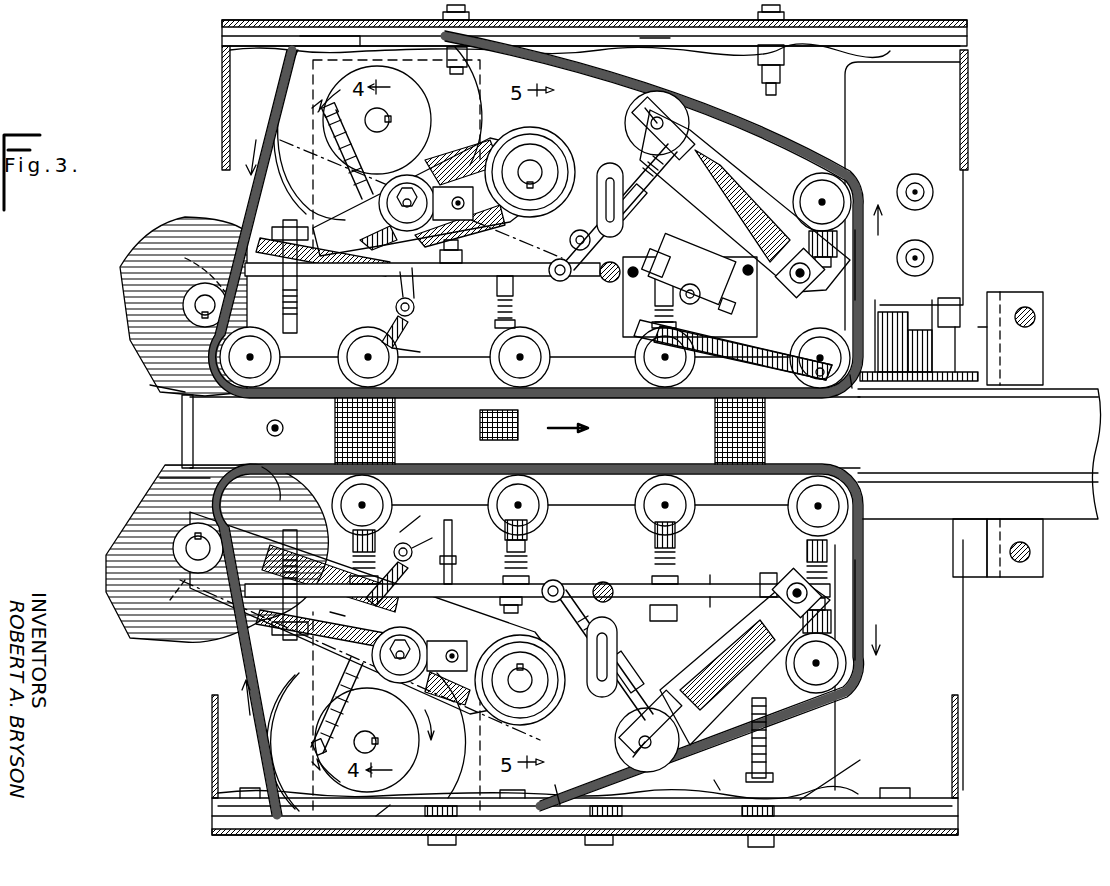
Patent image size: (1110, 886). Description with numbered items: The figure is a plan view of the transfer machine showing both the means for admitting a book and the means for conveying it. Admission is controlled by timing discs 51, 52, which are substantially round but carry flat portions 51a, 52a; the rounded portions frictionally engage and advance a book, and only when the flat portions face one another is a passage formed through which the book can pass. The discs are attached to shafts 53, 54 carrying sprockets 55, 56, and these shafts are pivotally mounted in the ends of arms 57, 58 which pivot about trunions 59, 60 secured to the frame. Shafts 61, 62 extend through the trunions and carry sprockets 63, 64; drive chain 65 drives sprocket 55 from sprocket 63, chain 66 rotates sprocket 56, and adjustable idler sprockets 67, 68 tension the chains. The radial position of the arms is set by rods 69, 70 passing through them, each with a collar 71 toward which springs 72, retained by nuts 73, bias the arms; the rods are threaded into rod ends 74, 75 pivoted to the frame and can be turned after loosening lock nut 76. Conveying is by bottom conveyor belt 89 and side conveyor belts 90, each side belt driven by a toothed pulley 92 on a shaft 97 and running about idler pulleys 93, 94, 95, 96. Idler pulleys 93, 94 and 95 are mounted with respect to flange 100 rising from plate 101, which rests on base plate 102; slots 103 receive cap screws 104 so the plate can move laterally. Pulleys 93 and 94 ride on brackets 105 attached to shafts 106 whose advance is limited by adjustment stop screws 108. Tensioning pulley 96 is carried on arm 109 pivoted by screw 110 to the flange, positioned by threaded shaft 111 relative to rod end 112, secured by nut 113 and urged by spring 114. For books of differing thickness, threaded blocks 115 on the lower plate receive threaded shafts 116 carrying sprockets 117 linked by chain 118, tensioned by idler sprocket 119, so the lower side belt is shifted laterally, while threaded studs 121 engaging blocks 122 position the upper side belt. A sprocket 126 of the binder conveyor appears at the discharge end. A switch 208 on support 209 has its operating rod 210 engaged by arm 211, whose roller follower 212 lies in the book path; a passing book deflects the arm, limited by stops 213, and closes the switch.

The timing disc 51 is at (165, 306).
The flat portion 51a is at (148, 352).
The timing disc 52 is at (202, 546).
The flat portion 52a is at (145, 490).
The shaft 53 is at (182, 290).
The shaft 54 is at (182, 538).
The sprocket 55 is at (198, 261).
The sprocket 56 is at (164, 594).
The arm 57 is at (343, 222).
The arm 58 is at (262, 585).
The trunion 59 is at (546, 158).
The trunion 60 is at (540, 705).
The shaft 61 is at (534, 165).
The shaft 62 is at (515, 690).
The sprocket 63 is at (565, 155).
The sprocket 64 is at (523, 682).
The drive chain 65 is at (478, 162).
The chain 66 is at (462, 630).
The adjustable idler sprocket 67 is at (447, 184).
The adjustable idler sprocket 68 is at (390, 628).
The rod 69 is at (413, 314).
The rod 70 is at (410, 576).
The collar 71 is at (370, 231).
The spring 72 is at (340, 161).
The nut 73 is at (352, 150).
The rod end 74 is at (406, 304).
The rod end 75 is at (426, 533).
The lock nut 76 is at (404, 518).
The bottom conveyor belt 89 is at (640, 443).
The side conveyor belt 90 is at (245, 195).
The pulley 92 is at (297, 98).
The idler pulley 93 is at (282, 352).
The idler pulley 94 is at (325, 357).
The idler pulley 95 is at (795, 180).
The idler pulley 96 is at (668, 105).
The shaft 97 is at (379, 108).
The flange 100 is at (480, 280).
The plate 101 is at (654, 430).
The base plate 102 is at (950, 138).
The slot 103 is at (624, 433).
The cap screw 104 is at (588, 230).
The bracket 105 is at (512, 318).
The shaft 106 is at (540, 280).
The adjustment stop screw 108 is at (536, 544).
The arm 109 is at (745, 427).
The screw 110 is at (848, 278).
The threaded shaft 111 is at (650, 210).
The rod end 112 is at (560, 258).
The nut 113 is at (603, 580).
The spring 114 is at (765, 374).
The threaded block 115 is at (773, 773).
The threaded shaft 116 is at (766, 737).
The sprocket 117 is at (623, 783).
The chain 118 is at (724, 772).
The idler sprocket 119 is at (559, 788).
The threaded stud 121 is at (452, 70).
The block 122 is at (463, 70).
The sprocket 126 is at (918, 382).
The switch 208 is at (668, 290).
The support 209 is at (640, 262).
The operating rod 210 is at (689, 268).
The arm 211 is at (736, 360).
The roller follower 212 is at (830, 385).
The stop 213 is at (612, 346).